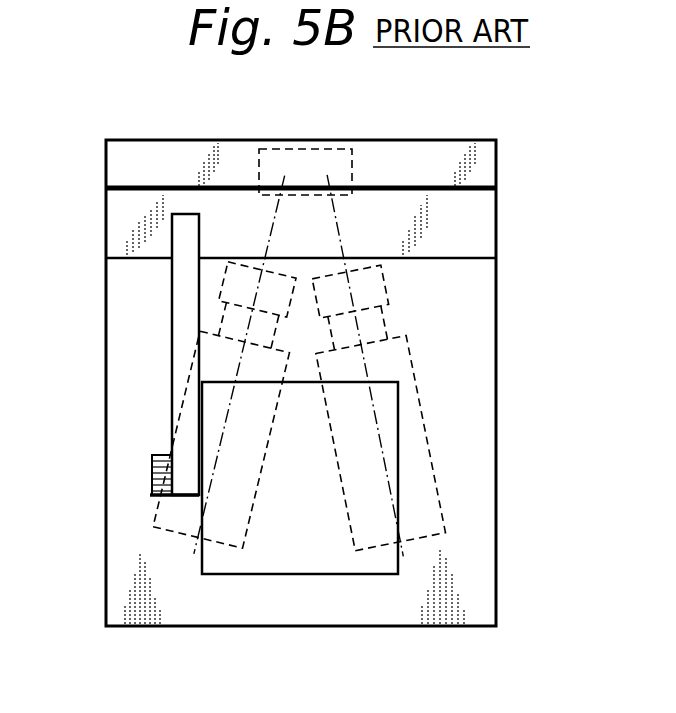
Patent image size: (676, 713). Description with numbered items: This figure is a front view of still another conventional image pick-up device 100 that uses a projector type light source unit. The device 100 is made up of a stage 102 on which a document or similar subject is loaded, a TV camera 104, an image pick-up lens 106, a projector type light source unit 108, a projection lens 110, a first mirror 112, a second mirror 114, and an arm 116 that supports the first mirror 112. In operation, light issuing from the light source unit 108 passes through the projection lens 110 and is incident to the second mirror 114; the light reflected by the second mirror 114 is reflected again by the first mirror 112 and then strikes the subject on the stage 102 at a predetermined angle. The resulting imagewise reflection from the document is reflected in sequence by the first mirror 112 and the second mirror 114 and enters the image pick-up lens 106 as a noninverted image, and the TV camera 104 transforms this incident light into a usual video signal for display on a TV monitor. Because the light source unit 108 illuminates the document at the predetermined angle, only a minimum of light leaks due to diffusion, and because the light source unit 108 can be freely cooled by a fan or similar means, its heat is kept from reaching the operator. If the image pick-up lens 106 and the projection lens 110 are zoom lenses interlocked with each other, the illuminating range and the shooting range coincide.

The image pick-up device 100 is at (557, 166).
The stage 102 is at (480, 582).
The TV camera 104 is at (153, 508).
The image pick-up lens 106 is at (222, 287).
The projector type light source unit 108 is at (422, 433).
The projection lens 110 is at (387, 288).
The first mirror 112 is at (307, 562).
The second mirror 114 is at (308, 148).
The arm 116 is at (183, 368).